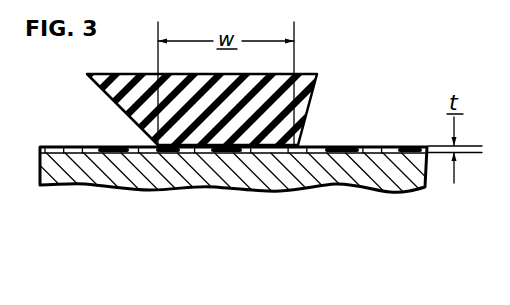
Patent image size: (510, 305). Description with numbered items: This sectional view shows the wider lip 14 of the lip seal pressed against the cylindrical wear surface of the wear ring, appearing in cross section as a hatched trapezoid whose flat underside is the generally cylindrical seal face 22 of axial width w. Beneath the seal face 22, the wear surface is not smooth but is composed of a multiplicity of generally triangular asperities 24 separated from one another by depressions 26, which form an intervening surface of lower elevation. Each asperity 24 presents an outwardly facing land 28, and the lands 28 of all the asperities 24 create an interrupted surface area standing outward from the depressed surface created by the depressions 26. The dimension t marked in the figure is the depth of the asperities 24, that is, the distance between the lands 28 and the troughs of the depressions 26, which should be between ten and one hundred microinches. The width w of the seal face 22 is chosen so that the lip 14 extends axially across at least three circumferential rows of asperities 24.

The lip 14 is at (229, 120).
The land 28 is at (315, 147).
The seal face 22 is at (261, 152).
The asperity 24 is at (304, 150).
The depression 26 is at (190, 152).